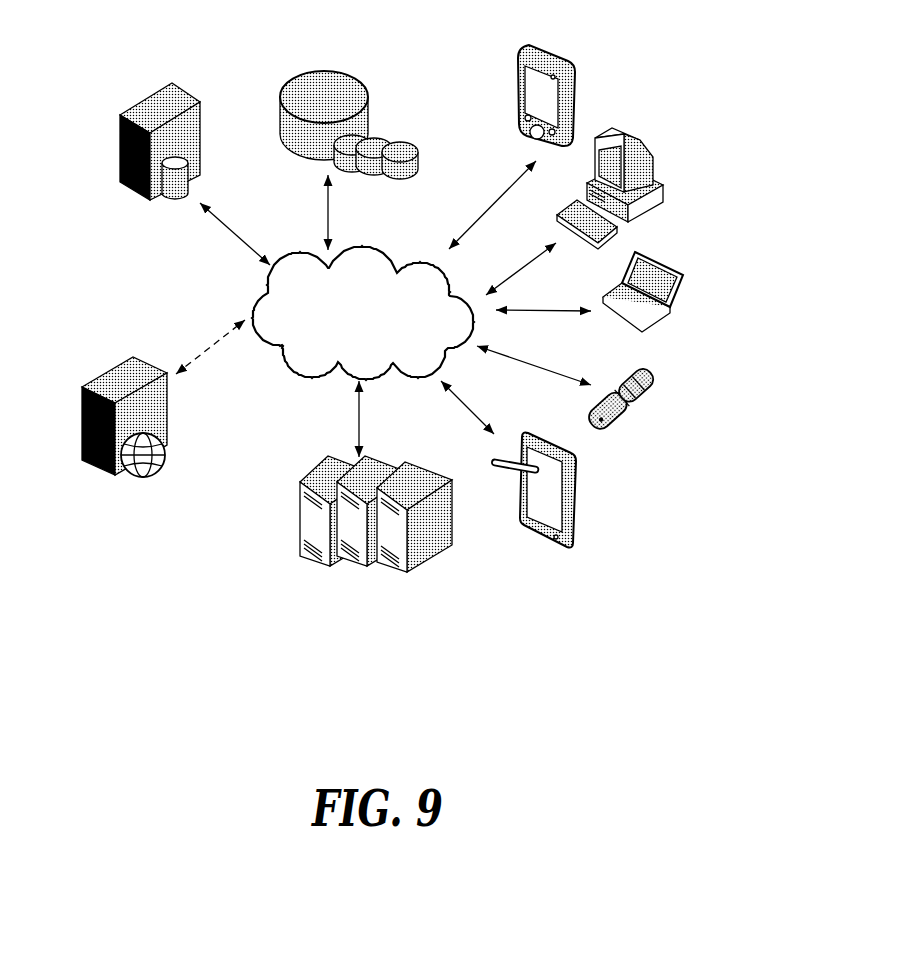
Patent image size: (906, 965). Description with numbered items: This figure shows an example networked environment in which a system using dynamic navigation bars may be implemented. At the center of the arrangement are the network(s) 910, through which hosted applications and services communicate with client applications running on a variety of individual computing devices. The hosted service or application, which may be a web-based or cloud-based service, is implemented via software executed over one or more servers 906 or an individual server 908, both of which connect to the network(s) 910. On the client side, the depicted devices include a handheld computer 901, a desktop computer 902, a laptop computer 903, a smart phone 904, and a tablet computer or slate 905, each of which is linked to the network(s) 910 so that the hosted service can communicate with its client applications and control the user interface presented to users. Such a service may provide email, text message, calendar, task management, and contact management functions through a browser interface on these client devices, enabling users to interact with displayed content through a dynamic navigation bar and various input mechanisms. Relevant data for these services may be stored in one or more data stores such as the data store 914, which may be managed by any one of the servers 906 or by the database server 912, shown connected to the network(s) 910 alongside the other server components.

The handheld computer 901 is at (578, 53).
The desktop computer 902 is at (662, 144).
The laptop computer 903 is at (681, 251).
The smart phone 904 is at (653, 366).
The tablet computer 905 is at (588, 476).
The servers 906 is at (325, 461).
The individual server 908 is at (103, 364).
The network(s) 910 is at (366, 237).
The database server 912 is at (173, 212).
The data store 914 is at (338, 51).